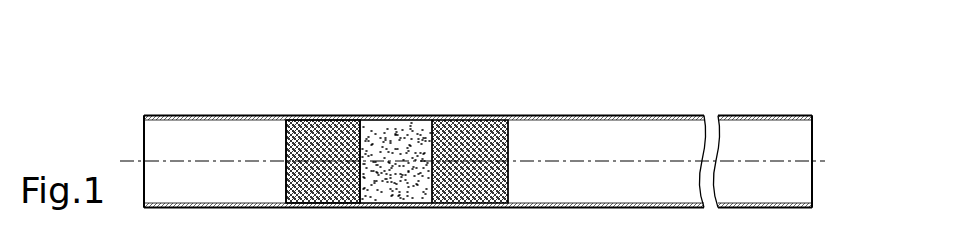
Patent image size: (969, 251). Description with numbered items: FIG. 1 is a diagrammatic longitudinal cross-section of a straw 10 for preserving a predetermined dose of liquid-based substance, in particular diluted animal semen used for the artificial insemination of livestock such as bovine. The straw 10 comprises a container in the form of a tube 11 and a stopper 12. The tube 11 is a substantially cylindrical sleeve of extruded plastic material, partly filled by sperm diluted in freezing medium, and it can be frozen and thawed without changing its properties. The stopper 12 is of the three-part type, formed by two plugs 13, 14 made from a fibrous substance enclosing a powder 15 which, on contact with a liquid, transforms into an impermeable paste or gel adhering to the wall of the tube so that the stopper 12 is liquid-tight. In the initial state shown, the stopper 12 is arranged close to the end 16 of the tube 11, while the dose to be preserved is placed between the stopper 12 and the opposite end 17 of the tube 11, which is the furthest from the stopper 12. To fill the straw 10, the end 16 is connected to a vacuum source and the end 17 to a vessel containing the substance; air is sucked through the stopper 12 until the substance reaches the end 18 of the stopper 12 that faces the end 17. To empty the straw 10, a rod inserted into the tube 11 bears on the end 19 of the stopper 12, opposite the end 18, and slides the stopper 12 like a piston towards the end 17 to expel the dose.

The straw 10 is at (193, 72).
The tube 11 is at (614, 115).
The stopper 12 is at (335, 126).
The plug 13 is at (320, 197).
The plug 14 is at (460, 195).
The powder 15 is at (390, 193).
The end of the tube 16 is at (144, 140).
The end of the tube 17 is at (812, 133).
The end of the stopper 18 is at (510, 141).
The end of the stopper 19 is at (284, 142).